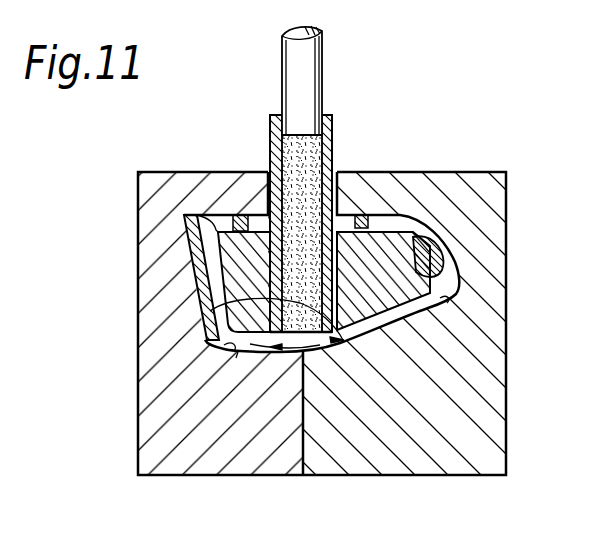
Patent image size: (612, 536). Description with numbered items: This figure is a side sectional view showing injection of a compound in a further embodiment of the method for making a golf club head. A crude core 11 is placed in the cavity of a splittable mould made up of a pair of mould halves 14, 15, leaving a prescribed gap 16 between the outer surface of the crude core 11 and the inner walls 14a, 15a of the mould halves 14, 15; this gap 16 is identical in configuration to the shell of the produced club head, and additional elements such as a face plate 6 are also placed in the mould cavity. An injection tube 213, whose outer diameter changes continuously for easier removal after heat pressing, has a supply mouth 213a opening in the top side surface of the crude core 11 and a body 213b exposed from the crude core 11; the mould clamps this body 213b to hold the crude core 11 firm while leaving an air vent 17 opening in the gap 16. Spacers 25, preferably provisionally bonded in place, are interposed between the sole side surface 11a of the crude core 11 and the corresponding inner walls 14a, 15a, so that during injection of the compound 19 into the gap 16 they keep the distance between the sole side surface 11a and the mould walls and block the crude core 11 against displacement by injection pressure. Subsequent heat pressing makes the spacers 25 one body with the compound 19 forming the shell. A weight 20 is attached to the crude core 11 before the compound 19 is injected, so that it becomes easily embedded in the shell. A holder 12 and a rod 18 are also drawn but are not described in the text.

The face plate 6 is at (187, 243).
The crude core 11 is at (430, 334).
The sole side surface 11a is at (197, 214).
The holder insert 12 is at (278, 273).
The mould half 14 is at (478, 414).
The inner wall 14a is at (440, 300).
The mould half 15 is at (157, 420).
The inner wall 15a is at (238, 352).
The gap 16 is at (447, 282).
The air vent 17 is at (336, 163).
The rod 18 is at (281, 63).
The compound 19 is at (210, 311).
The weight 20 is at (455, 250).
The spacers 25 is at (232, 220).
The injection tube 213 is at (268, 126).
The supply mouth 213a is at (260, 345).
The body 213b is at (268, 168).